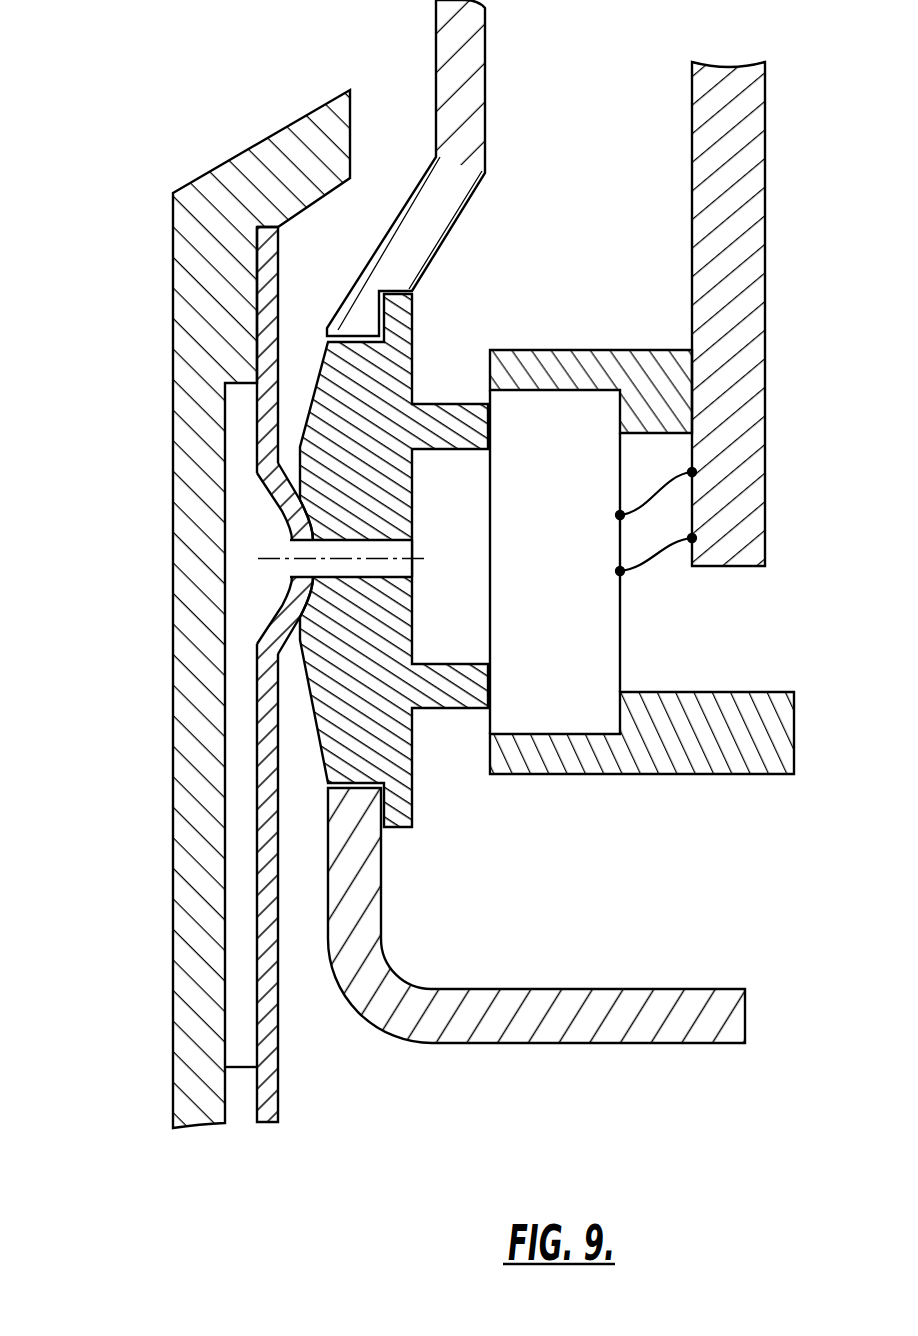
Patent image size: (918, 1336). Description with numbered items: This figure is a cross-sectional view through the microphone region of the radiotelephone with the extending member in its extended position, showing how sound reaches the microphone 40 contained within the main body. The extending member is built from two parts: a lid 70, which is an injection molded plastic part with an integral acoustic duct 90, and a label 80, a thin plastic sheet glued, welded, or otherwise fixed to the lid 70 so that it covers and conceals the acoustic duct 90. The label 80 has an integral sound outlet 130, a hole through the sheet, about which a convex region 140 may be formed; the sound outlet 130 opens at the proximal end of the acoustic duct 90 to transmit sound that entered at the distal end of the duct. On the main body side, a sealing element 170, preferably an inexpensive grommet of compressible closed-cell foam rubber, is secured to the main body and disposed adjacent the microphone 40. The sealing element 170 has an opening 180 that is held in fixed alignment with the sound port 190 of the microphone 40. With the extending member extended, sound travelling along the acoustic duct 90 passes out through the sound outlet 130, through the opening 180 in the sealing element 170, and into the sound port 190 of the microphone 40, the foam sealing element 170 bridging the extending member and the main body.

The microphone 40 is at (583, 457).
The lid 70 is at (198, 810).
The label 80 is at (282, 650).
The acoustic duct 90 is at (245, 493).
The sound outlet 130 is at (303, 545).
The convex region 140 is at (287, 623).
The sealing element 170 is at (333, 475).
The opening 180 is at (310, 578).
The sound port 190 is at (490, 508).